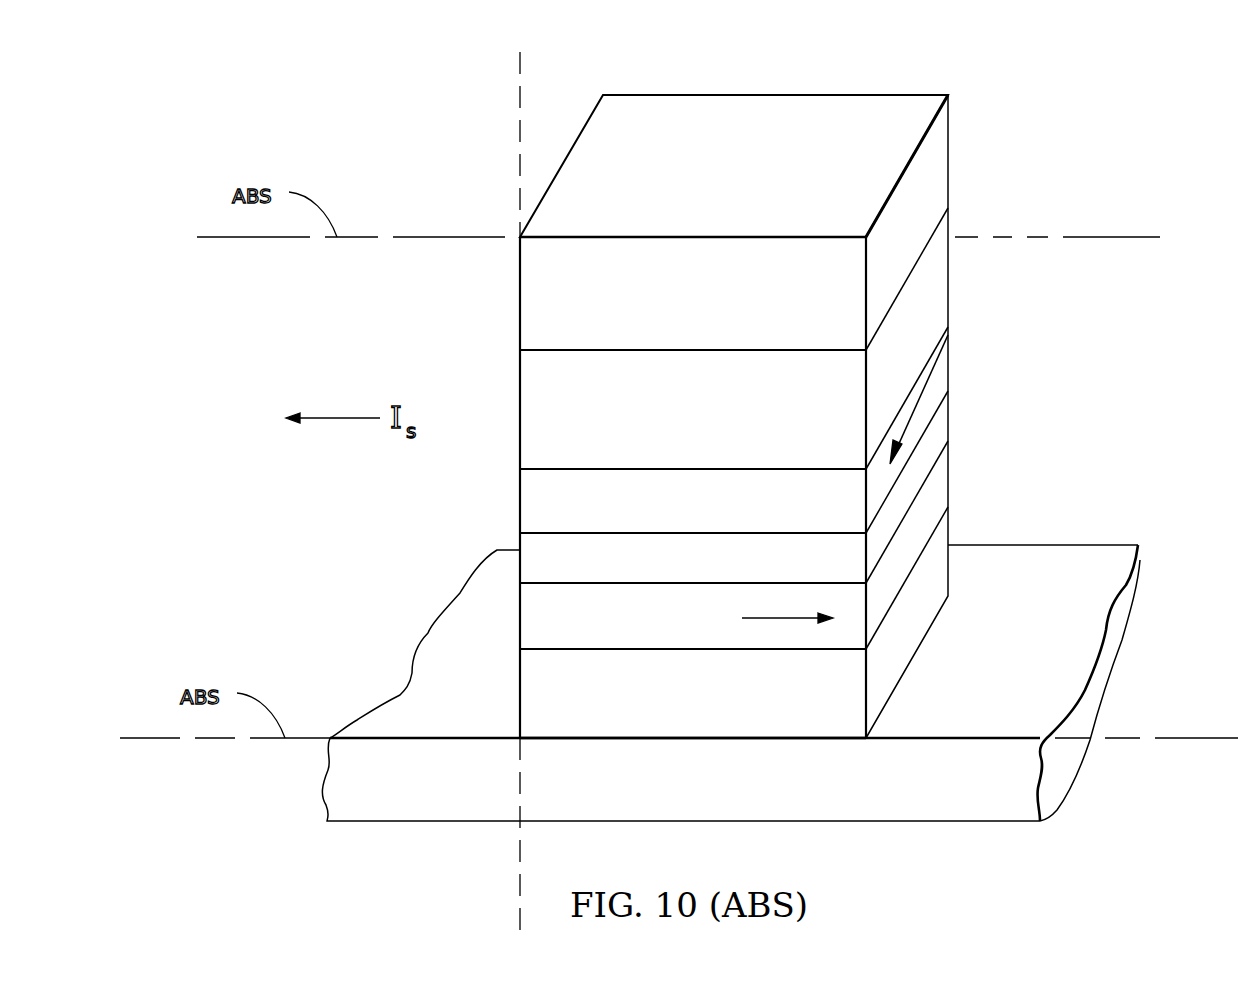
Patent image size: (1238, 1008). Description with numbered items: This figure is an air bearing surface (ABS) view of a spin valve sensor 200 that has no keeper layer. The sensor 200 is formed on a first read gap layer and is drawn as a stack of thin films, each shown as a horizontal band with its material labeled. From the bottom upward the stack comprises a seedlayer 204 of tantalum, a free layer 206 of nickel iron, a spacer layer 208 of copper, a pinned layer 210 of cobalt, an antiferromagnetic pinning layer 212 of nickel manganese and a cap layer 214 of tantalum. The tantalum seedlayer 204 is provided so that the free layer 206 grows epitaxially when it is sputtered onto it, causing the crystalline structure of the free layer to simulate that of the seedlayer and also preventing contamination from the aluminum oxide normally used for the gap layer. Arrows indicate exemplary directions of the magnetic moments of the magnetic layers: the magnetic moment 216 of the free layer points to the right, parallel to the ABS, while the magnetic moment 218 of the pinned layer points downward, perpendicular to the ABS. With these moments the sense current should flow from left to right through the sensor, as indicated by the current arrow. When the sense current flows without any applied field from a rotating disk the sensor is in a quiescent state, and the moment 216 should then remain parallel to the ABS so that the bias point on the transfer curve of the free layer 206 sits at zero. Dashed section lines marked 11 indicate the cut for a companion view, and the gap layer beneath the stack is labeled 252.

The section line for FIG. 11 view 11 is at (500, 118).
The spin valve sensor 200 is at (980, 85).
The seedlayer 204 is at (937, 560).
The free layer 206 is at (928, 506).
The spacer layer 208 is at (935, 437).
The pinned layer 210 is at (943, 375).
The antiferromagnetic pinning layer 212 is at (924, 306).
The cap layer 214 is at (937, 172).
The magnetic moment of the free layer 216 is at (778, 620).
The magnetic moment of the pinned layer 218 is at (924, 400).
The first gap layer (G1) 252 is at (865, 790).